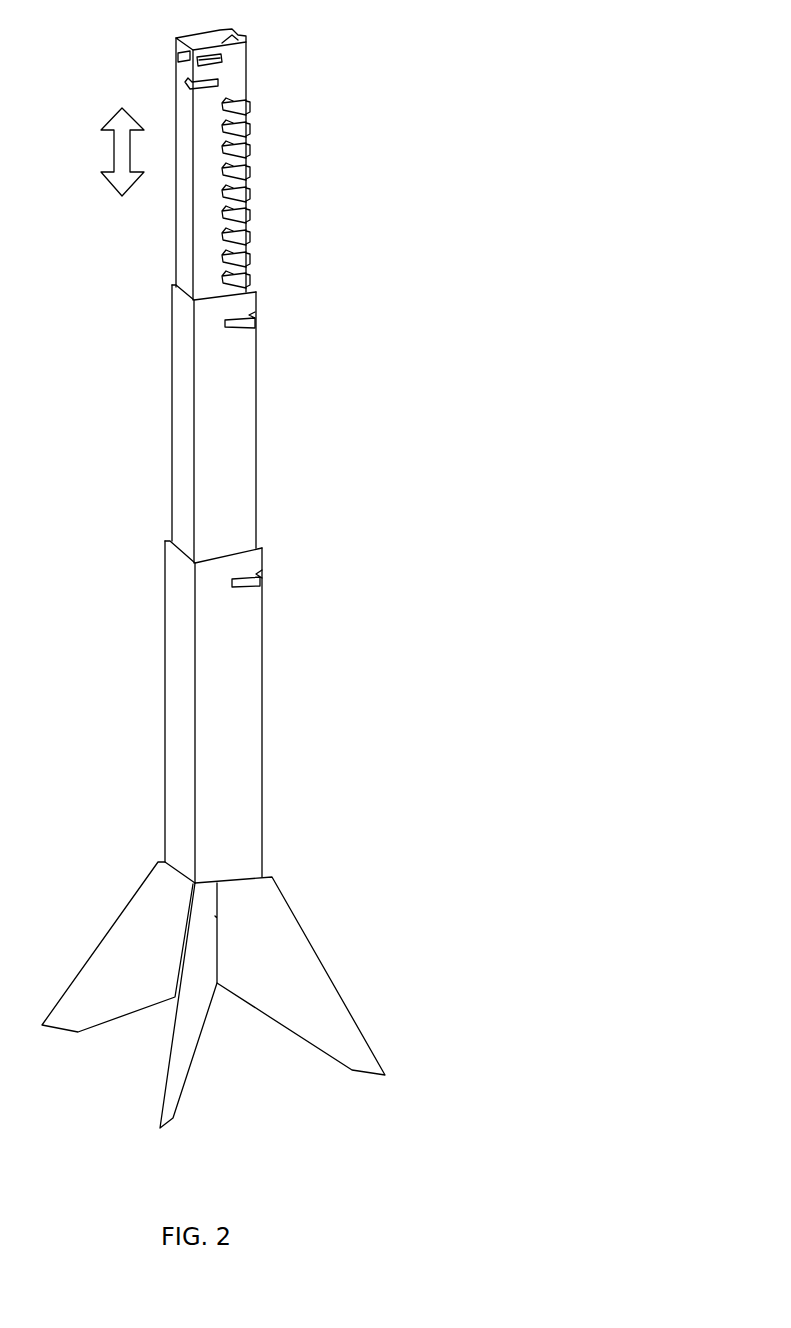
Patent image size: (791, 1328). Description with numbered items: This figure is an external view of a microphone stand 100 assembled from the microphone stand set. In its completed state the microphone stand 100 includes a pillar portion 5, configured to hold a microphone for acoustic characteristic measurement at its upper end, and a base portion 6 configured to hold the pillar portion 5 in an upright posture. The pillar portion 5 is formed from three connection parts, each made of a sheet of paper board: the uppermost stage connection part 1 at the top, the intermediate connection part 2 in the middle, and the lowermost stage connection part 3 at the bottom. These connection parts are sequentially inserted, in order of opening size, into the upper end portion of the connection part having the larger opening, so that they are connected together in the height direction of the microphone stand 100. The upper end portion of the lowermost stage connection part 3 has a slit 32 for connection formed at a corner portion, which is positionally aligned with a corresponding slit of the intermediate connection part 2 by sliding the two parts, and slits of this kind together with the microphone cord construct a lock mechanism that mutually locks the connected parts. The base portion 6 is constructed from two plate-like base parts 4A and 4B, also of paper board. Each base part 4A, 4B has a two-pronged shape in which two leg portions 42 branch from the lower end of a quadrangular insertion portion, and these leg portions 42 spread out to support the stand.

The microphone stand 100 is at (628, 40).
The uppermost stage connection part 1 is at (294, 144).
The intermediate connection part 2 is at (294, 396).
The lowermost stage connection part 3 is at (302, 657).
The slit for connection 32 is at (264, 570).
The pillar portion 5 is at (413, 31).
The base portion 6 is at (413, 878).
The base part 4A is at (303, 898).
The base part 4B is at (155, 1070).
The leg portion 42 is at (97, 947).